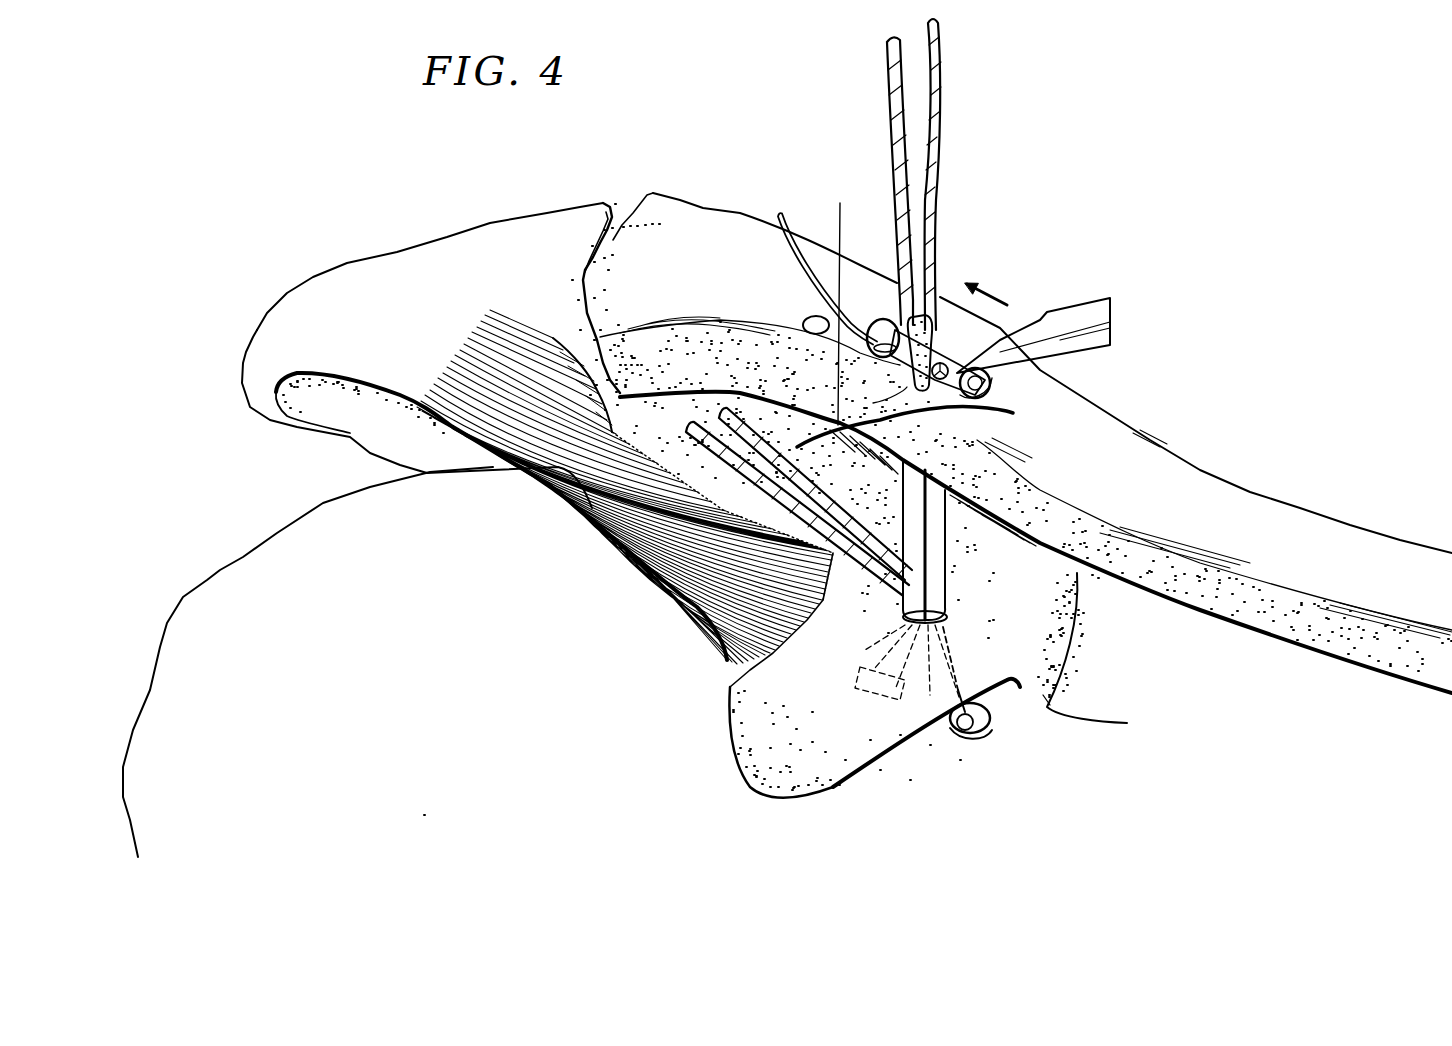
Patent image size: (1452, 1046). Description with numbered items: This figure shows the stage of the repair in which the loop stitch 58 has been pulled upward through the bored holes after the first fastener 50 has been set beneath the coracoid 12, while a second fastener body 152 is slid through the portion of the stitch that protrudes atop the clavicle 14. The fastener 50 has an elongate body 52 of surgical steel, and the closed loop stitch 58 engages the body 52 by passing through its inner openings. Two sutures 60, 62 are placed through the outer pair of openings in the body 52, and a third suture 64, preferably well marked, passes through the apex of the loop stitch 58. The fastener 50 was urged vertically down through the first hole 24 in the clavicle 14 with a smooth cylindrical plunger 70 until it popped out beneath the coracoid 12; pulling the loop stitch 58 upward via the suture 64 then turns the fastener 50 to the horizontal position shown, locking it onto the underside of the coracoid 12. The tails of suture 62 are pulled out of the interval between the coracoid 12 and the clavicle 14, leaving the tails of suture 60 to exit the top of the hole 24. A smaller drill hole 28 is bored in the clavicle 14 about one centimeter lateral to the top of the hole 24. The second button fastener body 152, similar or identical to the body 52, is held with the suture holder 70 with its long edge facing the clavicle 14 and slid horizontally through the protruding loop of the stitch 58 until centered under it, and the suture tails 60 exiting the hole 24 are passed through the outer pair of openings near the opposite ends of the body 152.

The coracoid 12 is at (833, 790).
The clavicle 14 is at (1197, 475).
The first hole 24 is at (922, 424).
The drill hole 28 is at (807, 313).
The fastener 50 is at (983, 735).
The fastener body 52 is at (945, 736).
The closed loop stitch 58 is at (907, 380).
The suture 60 is at (793, 230).
The suture 62 is at (835, 512).
The third suture 64 is at (897, 90).
The suture holder 70 is at (1083, 308).
The second button fastener body 152 is at (1015, 380).